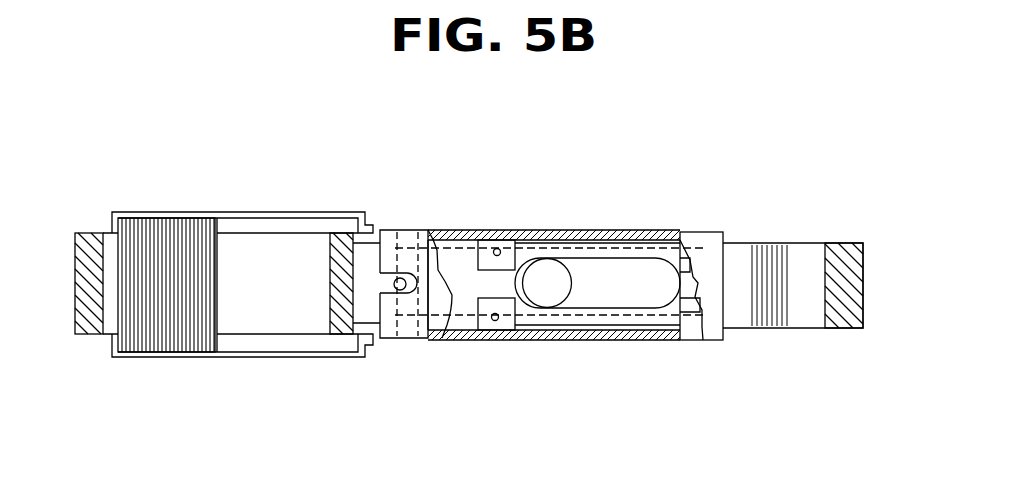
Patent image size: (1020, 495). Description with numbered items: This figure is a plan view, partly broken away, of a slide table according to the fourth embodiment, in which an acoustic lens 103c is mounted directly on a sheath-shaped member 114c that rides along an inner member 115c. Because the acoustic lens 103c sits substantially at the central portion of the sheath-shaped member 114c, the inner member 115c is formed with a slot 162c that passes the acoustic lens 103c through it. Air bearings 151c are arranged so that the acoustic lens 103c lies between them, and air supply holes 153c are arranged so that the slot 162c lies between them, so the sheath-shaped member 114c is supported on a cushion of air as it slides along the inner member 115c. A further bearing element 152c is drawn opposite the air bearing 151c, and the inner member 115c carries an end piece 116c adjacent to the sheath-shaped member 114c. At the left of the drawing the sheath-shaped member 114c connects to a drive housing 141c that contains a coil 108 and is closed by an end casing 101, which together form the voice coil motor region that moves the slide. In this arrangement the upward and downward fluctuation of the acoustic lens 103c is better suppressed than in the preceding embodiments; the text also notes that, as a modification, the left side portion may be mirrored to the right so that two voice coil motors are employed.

The casing 101 is at (112, 248).
The coil 108 is at (178, 233).
The housing 141c is at (290, 213).
The inner member 115c is at (462, 265).
The air bearings 151c is at (488, 255).
The acoustic lens 103c is at (540, 275).
The slot 162c is at (634, 275).
The sheath-shaped member 114c is at (700, 240).
The valve body 116c is at (403, 318).
The guide member 152c is at (500, 322).
The air supply holes 153c is at (438, 315).